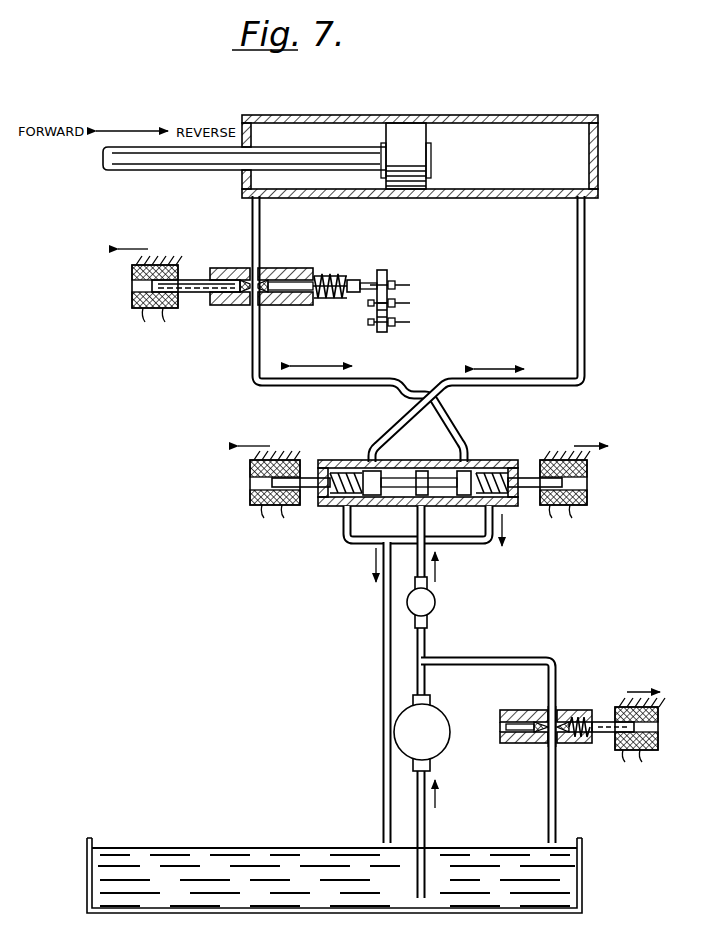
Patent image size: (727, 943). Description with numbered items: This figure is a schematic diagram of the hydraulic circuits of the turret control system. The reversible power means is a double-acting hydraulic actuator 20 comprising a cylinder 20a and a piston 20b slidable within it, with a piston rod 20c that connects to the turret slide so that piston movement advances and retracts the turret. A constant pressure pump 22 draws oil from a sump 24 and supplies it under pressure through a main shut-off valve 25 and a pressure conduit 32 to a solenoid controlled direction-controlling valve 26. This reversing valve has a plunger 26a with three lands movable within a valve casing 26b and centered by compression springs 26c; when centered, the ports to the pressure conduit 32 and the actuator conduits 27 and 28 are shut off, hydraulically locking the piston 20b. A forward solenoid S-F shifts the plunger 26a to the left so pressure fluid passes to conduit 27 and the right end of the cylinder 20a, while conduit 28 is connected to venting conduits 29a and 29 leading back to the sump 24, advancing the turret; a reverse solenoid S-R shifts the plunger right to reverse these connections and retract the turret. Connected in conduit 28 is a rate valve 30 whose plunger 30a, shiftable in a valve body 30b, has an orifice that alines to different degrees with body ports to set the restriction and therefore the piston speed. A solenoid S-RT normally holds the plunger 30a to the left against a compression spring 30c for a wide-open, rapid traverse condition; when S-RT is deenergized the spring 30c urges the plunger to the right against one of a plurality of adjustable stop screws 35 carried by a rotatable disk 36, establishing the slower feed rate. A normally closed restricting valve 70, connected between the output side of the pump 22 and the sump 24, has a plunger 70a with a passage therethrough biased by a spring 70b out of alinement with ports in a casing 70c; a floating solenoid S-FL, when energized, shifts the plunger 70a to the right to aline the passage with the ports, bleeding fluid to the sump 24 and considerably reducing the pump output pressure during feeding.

The double-acting hydraulic actuator 20 is at (350, 140).
The cylinder 20a is at (508, 123).
The piston 20b is at (408, 136).
The piston rod 20c is at (158, 165).
The rate valve 30 is at (273, 269).
The plunger 30a is at (354, 280).
The valve body 30b is at (221, 268).
The compression spring 30c is at (330, 276).
The rotatable disk 36 is at (387, 278).
The stop screws 35 is at (410, 322).
The conduit 28 is at (268, 378).
The conduit 27 is at (455, 380).
The direction-controlling valve 26 is at (418, 460).
The plunger 26a is at (358, 507).
The valve casing 26b is at (398, 460).
The compression springs 26c is at (334, 459).
The venting conduit 29a is at (346, 545).
The line 29 is at (382, 625).
The pressure conduit 32 is at (426, 558).
The main shut-off valve 25 is at (436, 603).
The constant pressure pump 22 is at (432, 748).
The restricting valve 70 is at (565, 739).
The plunger 70a is at (607, 734).
The spring 70b is at (582, 746).
The casing 70c is at (512, 744).
The sump 24 is at (190, 900).
The solenoid S-RT is at (135, 308).
The forward solenoid S-F is at (250, 507).
The reverse solenoid S-R is at (585, 507).
The floating solenoid S-FL is at (654, 752).